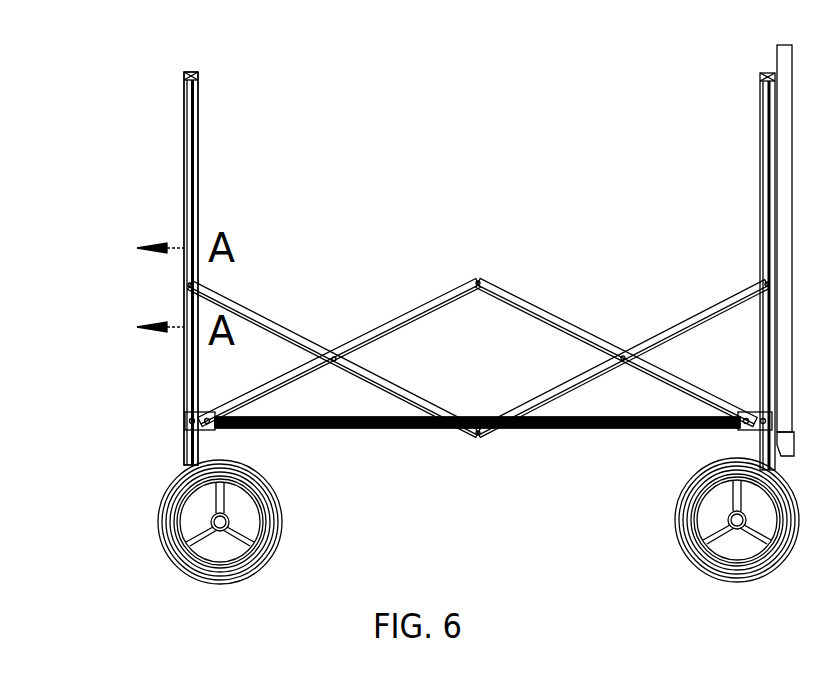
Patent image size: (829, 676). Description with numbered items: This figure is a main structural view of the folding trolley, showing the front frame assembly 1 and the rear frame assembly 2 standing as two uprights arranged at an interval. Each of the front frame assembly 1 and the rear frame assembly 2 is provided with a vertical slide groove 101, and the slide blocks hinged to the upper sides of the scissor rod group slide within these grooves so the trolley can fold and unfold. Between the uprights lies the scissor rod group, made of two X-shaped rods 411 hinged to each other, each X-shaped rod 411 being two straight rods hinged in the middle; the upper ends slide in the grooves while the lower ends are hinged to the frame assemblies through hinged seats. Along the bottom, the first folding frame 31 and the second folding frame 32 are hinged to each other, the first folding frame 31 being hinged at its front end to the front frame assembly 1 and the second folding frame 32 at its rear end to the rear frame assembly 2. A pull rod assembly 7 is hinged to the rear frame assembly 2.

The vertical slide groove 101 is at (190, 222).
The front frame assembly 1 is at (190, 410).
The X-shaped rod 411 is at (415, 310).
The pull rod assembly 7 is at (783, 127).
The rear frame assembly 2 is at (762, 203).
The first folding frame 31 is at (350, 430).
The second folding frame 32 is at (626, 428).